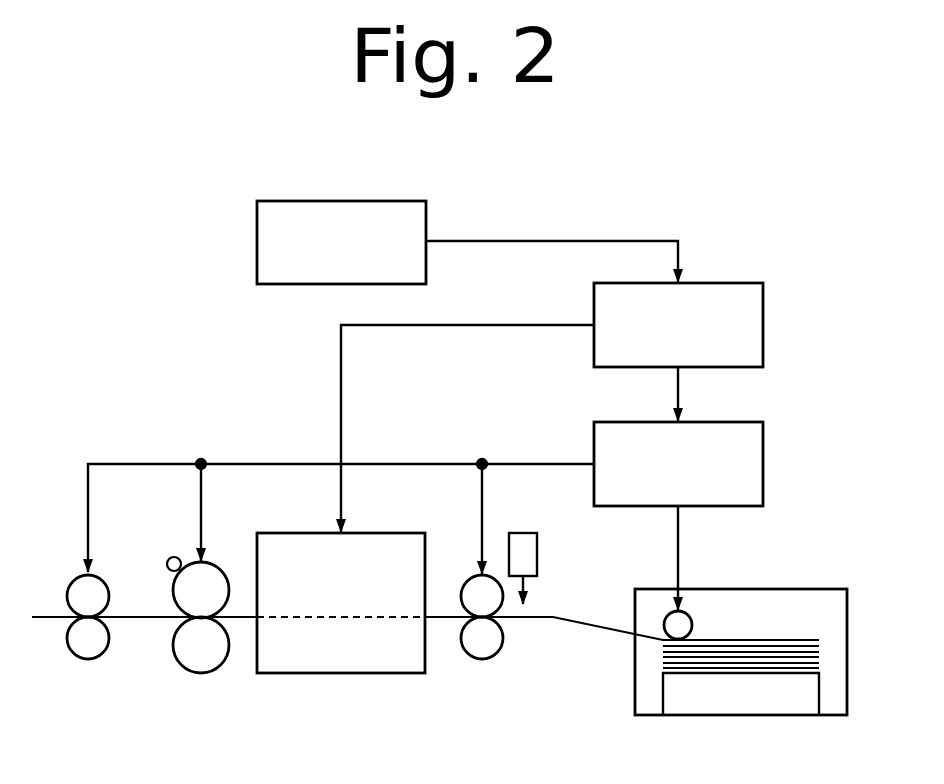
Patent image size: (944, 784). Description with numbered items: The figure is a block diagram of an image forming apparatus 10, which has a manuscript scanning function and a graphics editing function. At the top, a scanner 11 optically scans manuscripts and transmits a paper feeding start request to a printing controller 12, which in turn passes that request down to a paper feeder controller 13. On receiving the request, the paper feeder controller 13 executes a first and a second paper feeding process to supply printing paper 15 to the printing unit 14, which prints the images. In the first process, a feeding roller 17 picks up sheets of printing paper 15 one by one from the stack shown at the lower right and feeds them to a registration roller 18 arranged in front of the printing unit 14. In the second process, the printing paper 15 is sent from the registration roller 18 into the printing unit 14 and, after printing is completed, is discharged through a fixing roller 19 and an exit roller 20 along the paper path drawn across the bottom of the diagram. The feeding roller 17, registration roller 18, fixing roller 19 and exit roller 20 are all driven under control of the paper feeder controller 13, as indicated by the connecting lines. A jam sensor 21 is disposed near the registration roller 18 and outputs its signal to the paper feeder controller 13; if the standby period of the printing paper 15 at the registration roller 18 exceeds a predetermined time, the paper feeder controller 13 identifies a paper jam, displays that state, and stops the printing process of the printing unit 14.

The image forming apparatus 10 is at (649, 175).
The scanner 11 is at (341, 201).
The printing controller 12 is at (763, 326).
The paper feeder controller 13 is at (763, 465).
The printing unit 14 is at (341, 673).
The printing paper 15 is at (847, 652).
The feeding roller 17 is at (688, 613).
The registration roller 18 is at (482, 659).
The fixing roller 19 is at (201, 673).
The exit roller 20 is at (88, 659).
The jam sensor 21 is at (537, 555).